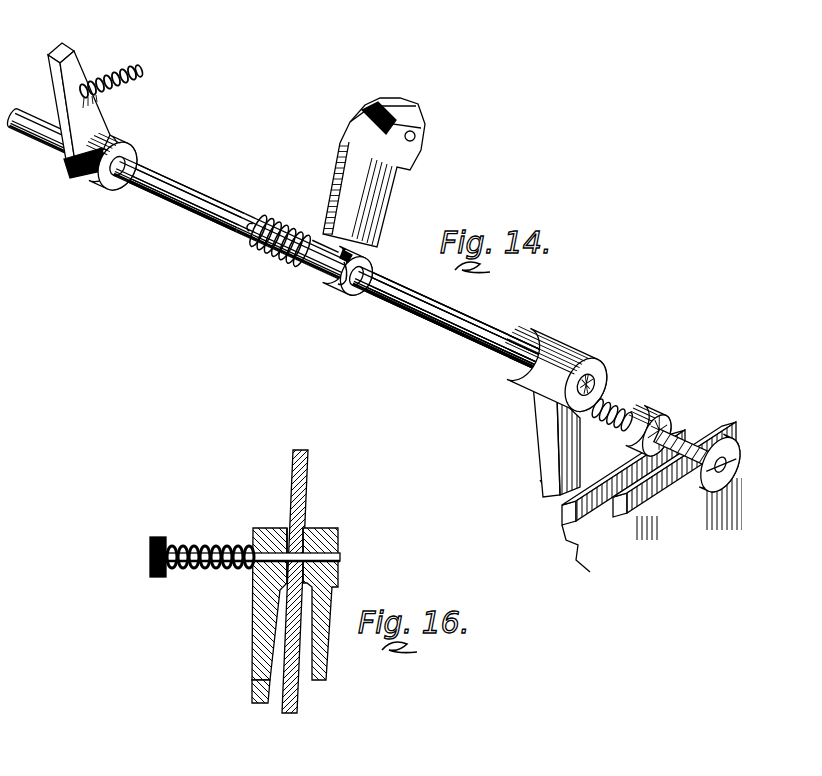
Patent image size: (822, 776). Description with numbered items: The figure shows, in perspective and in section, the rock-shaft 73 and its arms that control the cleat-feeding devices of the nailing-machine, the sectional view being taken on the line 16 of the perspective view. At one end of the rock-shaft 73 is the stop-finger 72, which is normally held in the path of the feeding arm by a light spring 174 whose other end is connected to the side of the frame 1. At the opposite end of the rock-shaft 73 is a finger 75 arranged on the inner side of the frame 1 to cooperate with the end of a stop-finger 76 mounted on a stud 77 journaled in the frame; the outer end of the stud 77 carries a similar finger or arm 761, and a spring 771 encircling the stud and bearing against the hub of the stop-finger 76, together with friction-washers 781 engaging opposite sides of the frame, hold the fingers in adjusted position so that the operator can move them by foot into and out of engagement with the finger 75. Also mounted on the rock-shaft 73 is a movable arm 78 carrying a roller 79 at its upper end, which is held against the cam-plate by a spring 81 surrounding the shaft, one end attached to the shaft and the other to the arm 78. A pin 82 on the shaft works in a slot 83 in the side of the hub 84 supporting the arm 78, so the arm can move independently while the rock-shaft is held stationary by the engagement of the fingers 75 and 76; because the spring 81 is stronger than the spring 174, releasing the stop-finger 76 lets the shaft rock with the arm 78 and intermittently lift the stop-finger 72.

In FIG. 14, the frame plate 1 is at (598, 543).
In FIG. 16, the frame plate 1 is at (293, 690).
In FIG. 14, the slot in frame 16 is at (540, 480).
In FIG. 14, the stop-finger 72 is at (87, 118).
In FIG. 14, the rock-shaft 73 is at (436, 326).
In FIG. 14, the finger 75 is at (550, 440).
In FIG. 16, the finger 75 is at (264, 699).
In FIG. 14, the stop-finger 76 is at (603, 503).
In FIG. 16, the stop-finger 76 is at (262, 648).
In FIG. 14, the finger or arm 761 is at (633, 523).
In FIG. 16, the finger or arm 761 is at (330, 669).
In FIG. 14, the stud 77 is at (712, 492).
In FIG. 16, the stud 77 is at (343, 557).
In FIG. 14, the spring 771 is at (626, 410).
In FIG. 16, the spring 771 is at (232, 545).
In FIG. 14, the movable arm 78 is at (365, 209).
In FIG. 14, the friction-washers 781 is at (690, 425).
In FIG. 16, the friction-washers 781 is at (305, 533).
In FIG. 14, the roller 79 is at (398, 119).
In FIG. 14, the spring 81 is at (283, 254).
In FIG. 14, the pin 82 is at (324, 288).
In FIG. 14, the slot 83 is at (372, 256).
In FIG. 14, the hub 84 is at (348, 297).
In FIG. 14, the light spring 174 is at (139, 75).